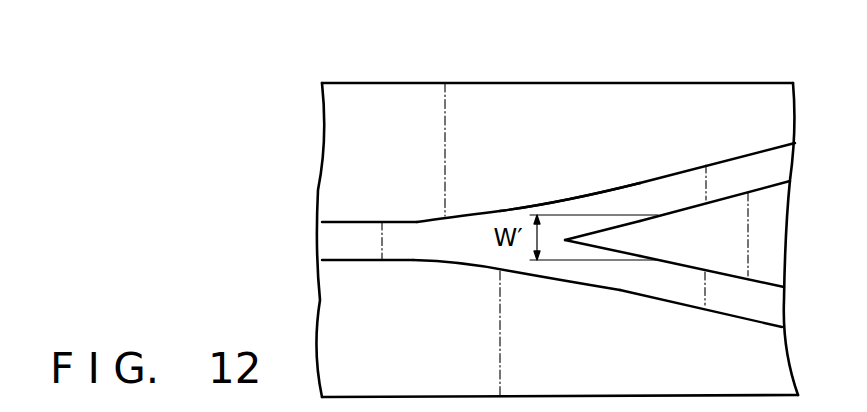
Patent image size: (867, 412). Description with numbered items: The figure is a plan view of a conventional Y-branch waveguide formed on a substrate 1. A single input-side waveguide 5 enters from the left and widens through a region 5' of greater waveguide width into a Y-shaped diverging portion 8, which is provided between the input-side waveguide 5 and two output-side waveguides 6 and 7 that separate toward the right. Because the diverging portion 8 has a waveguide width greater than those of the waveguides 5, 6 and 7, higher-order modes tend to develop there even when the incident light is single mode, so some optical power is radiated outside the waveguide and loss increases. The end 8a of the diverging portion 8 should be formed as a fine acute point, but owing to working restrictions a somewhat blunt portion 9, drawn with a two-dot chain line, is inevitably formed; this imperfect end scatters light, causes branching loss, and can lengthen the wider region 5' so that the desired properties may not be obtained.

The substrate 1 is at (355, 83).
The input-side waveguide 5 is at (369, 272).
The region having a greater waveguide width 5' is at (526, 252).
The Y-shaped diverging portion 8 is at (537, 191).
The end of the diverging portion 8a is at (565, 243).
The output-side waveguide 6 is at (728, 167).
The output-side waveguide 7 is at (741, 308).
The blunt portion 9 is at (662, 214).